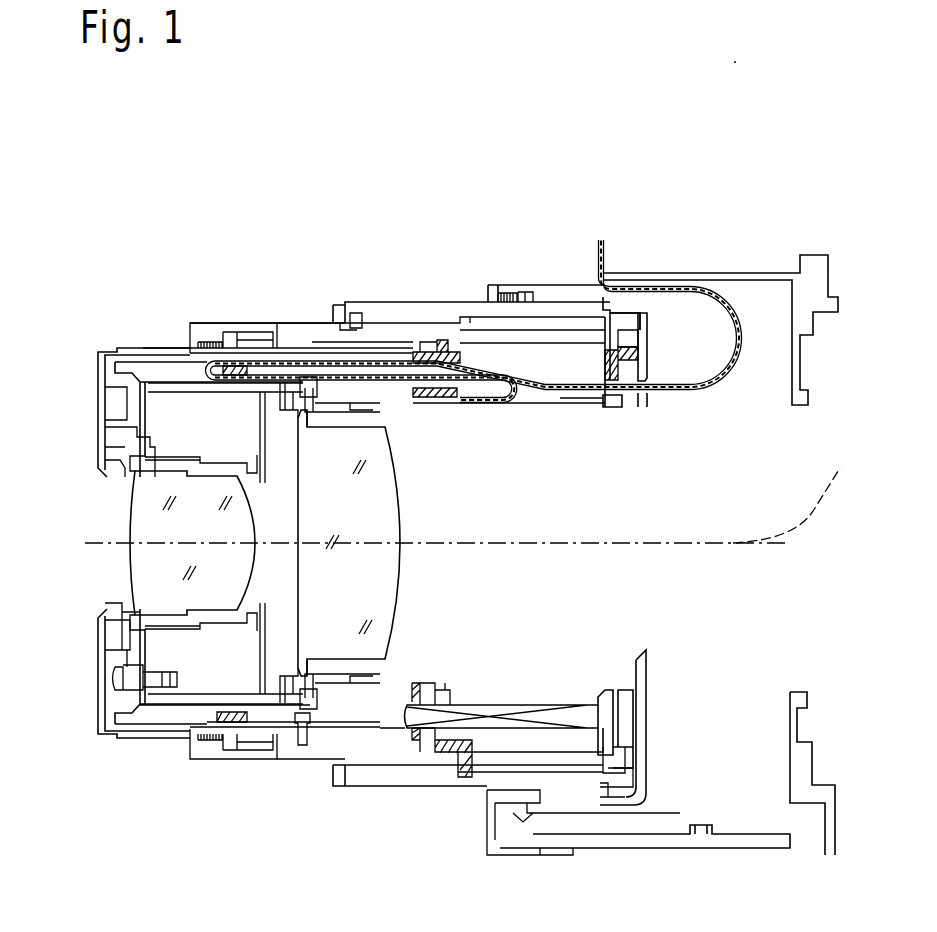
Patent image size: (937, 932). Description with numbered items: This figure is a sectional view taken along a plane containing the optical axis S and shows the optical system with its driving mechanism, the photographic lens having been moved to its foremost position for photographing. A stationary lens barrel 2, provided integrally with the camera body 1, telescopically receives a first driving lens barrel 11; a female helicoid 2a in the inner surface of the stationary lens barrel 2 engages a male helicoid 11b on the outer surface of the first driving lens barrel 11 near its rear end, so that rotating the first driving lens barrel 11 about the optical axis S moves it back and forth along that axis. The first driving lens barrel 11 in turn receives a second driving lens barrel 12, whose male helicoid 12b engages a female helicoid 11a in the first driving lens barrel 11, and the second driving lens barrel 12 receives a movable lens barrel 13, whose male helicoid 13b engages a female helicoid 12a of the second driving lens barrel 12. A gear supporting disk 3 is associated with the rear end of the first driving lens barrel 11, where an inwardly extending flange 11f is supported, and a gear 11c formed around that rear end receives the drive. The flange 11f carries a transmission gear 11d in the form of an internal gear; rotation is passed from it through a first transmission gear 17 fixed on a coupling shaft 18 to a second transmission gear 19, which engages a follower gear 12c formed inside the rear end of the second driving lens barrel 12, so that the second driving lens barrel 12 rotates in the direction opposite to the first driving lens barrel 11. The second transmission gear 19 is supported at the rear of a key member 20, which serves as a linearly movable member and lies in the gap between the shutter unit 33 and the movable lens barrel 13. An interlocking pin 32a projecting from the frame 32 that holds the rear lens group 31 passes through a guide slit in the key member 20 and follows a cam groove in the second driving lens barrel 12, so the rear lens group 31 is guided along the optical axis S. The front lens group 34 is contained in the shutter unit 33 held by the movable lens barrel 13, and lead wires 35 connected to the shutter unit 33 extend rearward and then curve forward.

The camera body 1 is at (695, 273).
The stationary lens barrel 2 is at (553, 286).
The female helicoid 2a is at (530, 292).
The gear supporting disk 3 is at (643, 373).
The first driving lens barrel 11 is at (443, 310).
The female helicoid 11a is at (473, 322).
The male helicoid 11b is at (580, 300).
The gear 11c is at (652, 373).
The transmission gear 11d is at (633, 340).
The flange 11f is at (612, 342).
The second driving lens barrel 12 is at (290, 333).
The female helicoid 12a is at (322, 347).
The male helicoid 12b is at (410, 323).
The follower gear 12c is at (440, 397).
The movable lens barrel 13 is at (130, 348).
The male helicoid 13b is at (265, 348).
The first transmission gear 17 is at (627, 693).
The coupling shaft 18 is at (552, 717).
The second transmission gear 19 is at (430, 683).
The key member 20 is at (385, 695).
The rear lens group 31 is at (378, 518).
The frame 32 is at (340, 668).
The interlocking pin 32a is at (290, 733).
The shutter unit 33 is at (155, 422).
The front lens group 34 is at (143, 512).
The lead wires 35 is at (738, 327).
The optical axis S is at (470, 493).